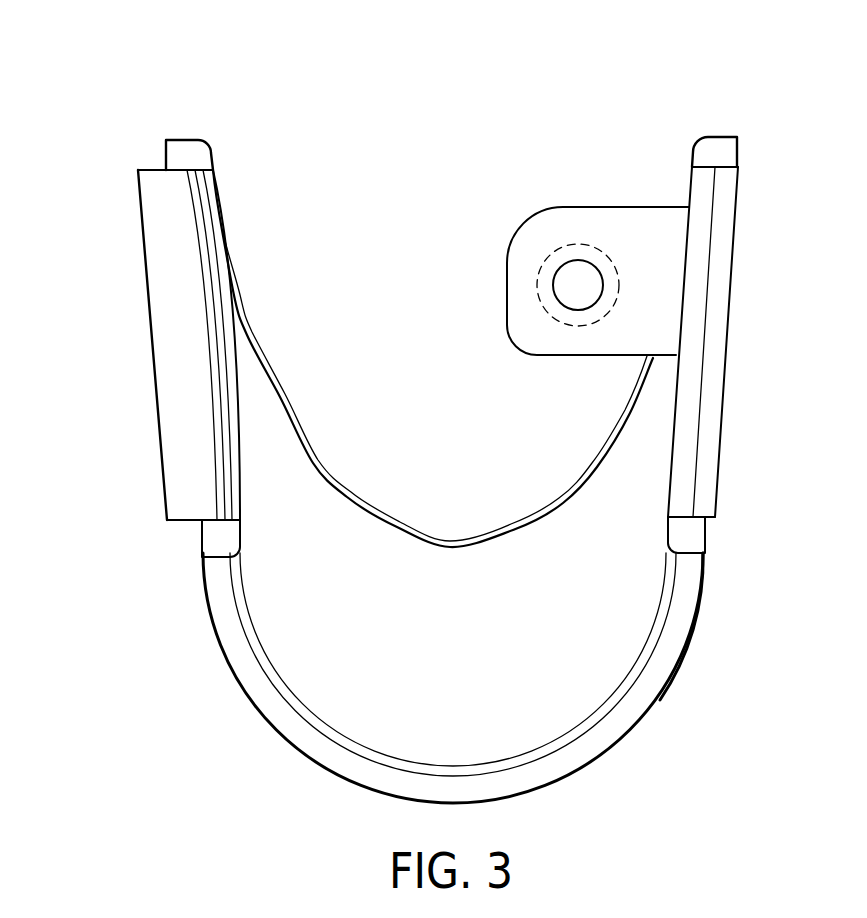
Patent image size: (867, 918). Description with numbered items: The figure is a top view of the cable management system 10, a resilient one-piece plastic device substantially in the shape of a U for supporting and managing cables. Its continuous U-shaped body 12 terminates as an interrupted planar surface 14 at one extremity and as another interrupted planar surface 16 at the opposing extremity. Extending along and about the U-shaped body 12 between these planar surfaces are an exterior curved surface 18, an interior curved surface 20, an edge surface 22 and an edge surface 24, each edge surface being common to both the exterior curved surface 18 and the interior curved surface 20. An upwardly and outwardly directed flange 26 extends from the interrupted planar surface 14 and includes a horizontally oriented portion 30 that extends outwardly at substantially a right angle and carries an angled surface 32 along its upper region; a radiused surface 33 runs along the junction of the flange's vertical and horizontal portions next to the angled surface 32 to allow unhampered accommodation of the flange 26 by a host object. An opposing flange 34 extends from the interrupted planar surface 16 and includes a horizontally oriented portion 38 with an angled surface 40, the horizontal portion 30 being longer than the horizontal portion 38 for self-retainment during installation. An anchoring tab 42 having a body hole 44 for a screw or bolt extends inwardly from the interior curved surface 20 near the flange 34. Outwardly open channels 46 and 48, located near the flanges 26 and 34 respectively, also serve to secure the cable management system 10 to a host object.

The cable management system 10 is at (357, 104).
The U-shaped body 12 is at (593, 779).
The interrupted planar surface 14 is at (169, 546).
The interrupted planar surface 16 is at (736, 544).
The exterior curved surface 18 is at (727, 626).
The interior curved surface 20 is at (467, 660).
The edge surface 22 is at (453, 687).
The edge surface 24 is at (433, 358).
The flange 26 is at (178, 289).
The horizontally oriented portion 30 is at (106, 345).
The angled surface 32 is at (154, 330).
The radiused surface 33 is at (249, 345).
The flange 34 is at (756, 287).
The horizontally oriented portion 38 is at (774, 342).
The angled surface 40 is at (745, 327).
The anchoring tab 42 is at (533, 217).
The body hole 44 is at (517, 262).
The channel 46 is at (177, 357).
The channel 48 is at (715, 342).